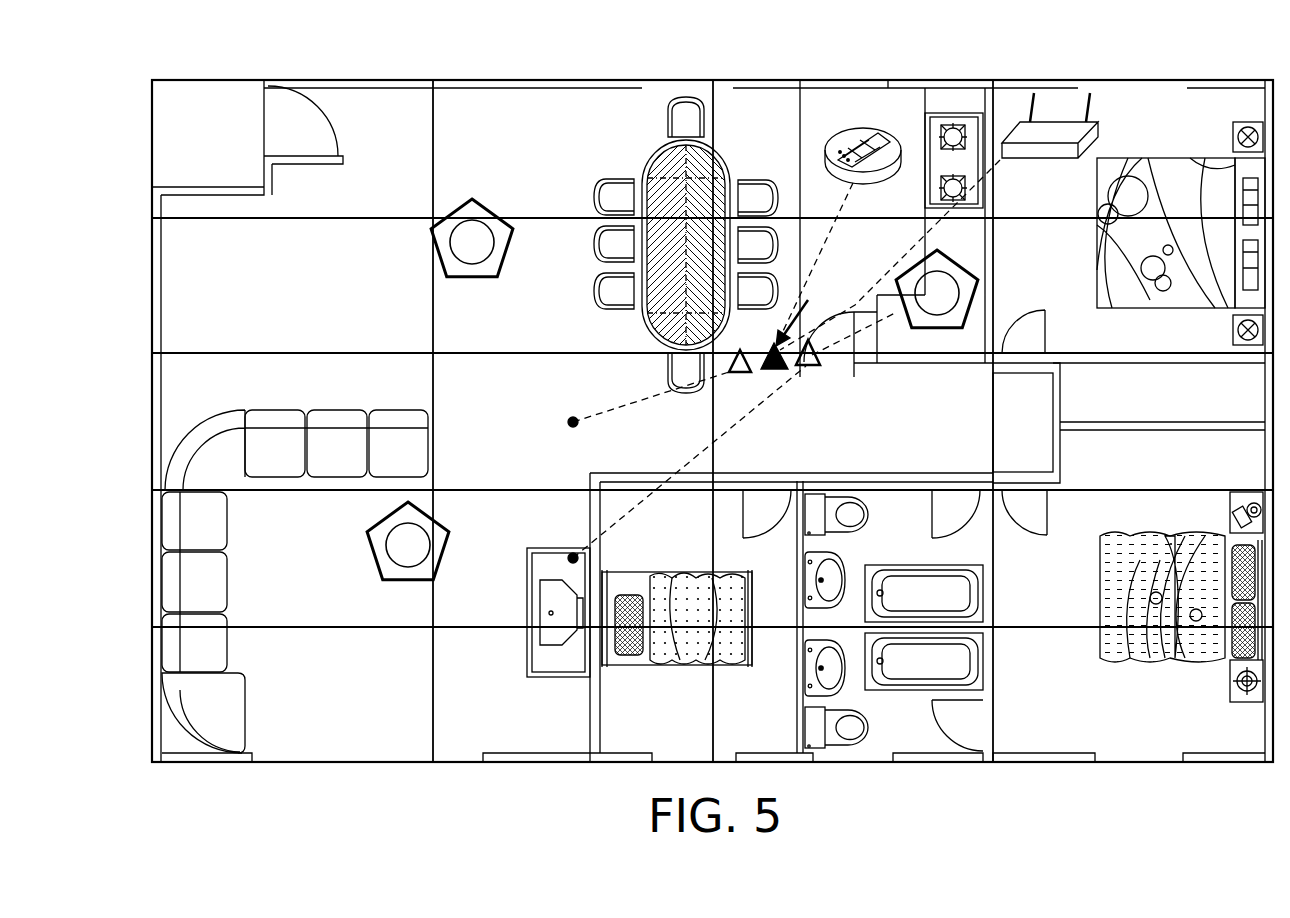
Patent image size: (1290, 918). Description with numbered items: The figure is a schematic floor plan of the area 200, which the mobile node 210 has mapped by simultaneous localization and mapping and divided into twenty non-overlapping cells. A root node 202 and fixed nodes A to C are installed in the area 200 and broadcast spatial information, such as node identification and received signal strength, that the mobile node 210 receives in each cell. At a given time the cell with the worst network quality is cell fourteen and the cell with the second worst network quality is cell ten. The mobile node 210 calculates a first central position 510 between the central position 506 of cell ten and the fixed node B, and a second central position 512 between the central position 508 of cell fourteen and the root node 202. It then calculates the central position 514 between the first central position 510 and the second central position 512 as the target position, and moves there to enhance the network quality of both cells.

The area 200 is at (180, 77).
The mobile node 210 is at (848, 128).
The root node 202 is at (1100, 131).
The central position of the cell #10 506 is at (573, 422).
The central position of the cell #14 508 is at (573, 558).
The first central position 510 is at (738, 375).
The second central position 512 is at (812, 368).
The central position (target position) 514 is at (775, 369).